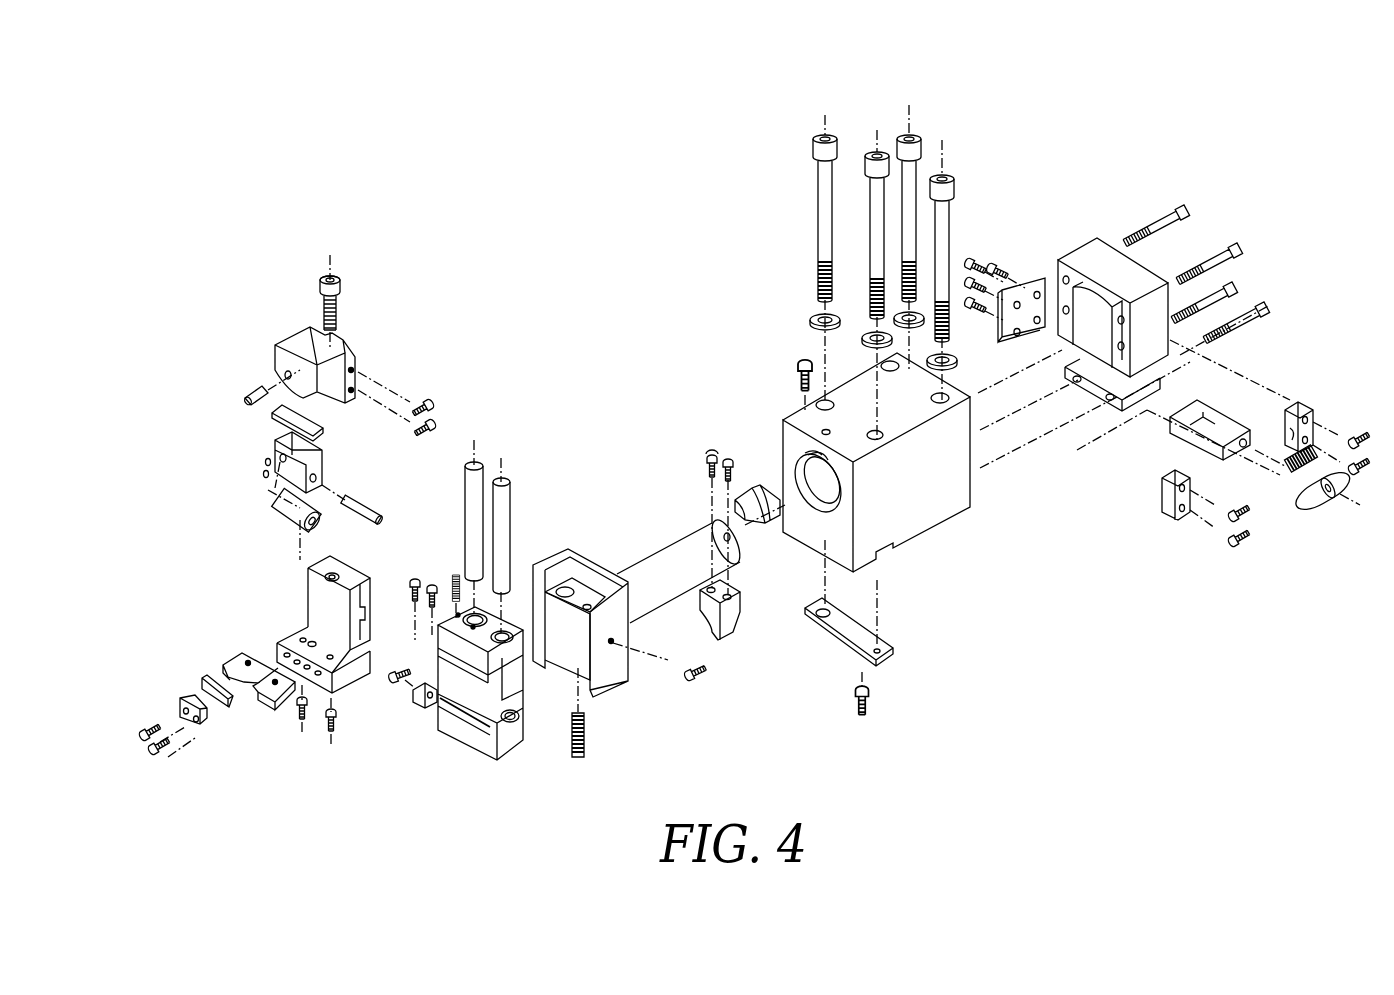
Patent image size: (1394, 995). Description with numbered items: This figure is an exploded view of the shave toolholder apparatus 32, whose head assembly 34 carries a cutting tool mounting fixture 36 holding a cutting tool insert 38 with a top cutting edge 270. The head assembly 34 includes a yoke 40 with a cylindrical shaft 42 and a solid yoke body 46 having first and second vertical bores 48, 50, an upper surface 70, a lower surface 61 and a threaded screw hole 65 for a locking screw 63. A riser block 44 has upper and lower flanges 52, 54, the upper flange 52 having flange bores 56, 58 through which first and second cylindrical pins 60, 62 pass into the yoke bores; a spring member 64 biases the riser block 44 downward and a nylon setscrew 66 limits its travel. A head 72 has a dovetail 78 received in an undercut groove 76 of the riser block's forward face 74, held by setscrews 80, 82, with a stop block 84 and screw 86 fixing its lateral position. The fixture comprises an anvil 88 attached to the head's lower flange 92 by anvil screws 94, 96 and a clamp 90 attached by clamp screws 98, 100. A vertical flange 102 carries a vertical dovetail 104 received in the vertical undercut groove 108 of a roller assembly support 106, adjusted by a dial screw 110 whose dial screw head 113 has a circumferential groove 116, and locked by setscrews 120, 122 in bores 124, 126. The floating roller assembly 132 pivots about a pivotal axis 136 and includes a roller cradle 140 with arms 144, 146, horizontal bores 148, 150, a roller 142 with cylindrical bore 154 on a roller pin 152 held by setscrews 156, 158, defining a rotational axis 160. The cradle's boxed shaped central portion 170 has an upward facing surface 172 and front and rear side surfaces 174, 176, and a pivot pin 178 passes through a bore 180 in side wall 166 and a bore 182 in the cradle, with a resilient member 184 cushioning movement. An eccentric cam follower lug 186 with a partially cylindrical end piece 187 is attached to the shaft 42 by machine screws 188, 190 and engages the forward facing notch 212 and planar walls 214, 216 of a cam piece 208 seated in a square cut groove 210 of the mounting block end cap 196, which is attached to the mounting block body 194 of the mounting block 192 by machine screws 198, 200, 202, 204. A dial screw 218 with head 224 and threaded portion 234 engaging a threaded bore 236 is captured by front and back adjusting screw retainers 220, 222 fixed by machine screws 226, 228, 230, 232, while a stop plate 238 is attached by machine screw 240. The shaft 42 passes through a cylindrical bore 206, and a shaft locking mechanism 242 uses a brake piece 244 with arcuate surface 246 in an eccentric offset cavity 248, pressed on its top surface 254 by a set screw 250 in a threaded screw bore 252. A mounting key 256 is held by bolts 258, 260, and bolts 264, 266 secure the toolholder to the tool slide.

The toolholder apparatus 32 is at (1094, 122).
The head assembly 34 is at (449, 679).
The cutting tool mounting fixture 36 is at (209, 750).
The cutting tool insert 38 is at (205, 695).
The yoke 40 is at (609, 631).
The cylindrical shaft 42 is at (672, 547).
The riser block 44 is at (484, 685).
The solid yoke body 46 is at (560, 632).
The first vertical bore 48 is at (565, 590).
The second vertical bore 50 is at (590, 606).
The upper flange 52 is at (508, 663).
The lower flange 54 is at (516, 742).
The flange bore 56 is at (480, 615).
The flange bore 58 is at (505, 632).
The first cylindrical pin 60 is at (480, 464).
The lower surface 61 is at (573, 668).
The second cylindrical pin 62 is at (506, 480).
The locking screw 63 is at (688, 678).
The spring member 64 is at (578, 760).
The threaded screw hole 65 is at (611, 644).
The nylon setscrew 66 is at (456, 574).
The upper surface 70 is at (580, 598).
The head 72 is at (312, 698).
The forward face 74 is at (483, 727).
The undercut groove 76 is at (450, 705).
The dovetail 78 is at (372, 622).
The setscrew 80 is at (414, 582).
The setscrew 82 is at (432, 587).
The stop block 84 is at (425, 707).
The screw 86 is at (393, 680).
The anvil 88 is at (260, 700).
The clamp 90 is at (195, 730).
The lower flange 92 is at (290, 638).
The anvil screw 94 is at (302, 722).
The anvil screw 96 is at (331, 735).
The clamp screw 98 is at (142, 735).
The clamp screw 100 is at (155, 750).
The vertical flange 102 is at (330, 576).
The vertical dovetail 104 is at (310, 594).
The roller assembly support 106 is at (360, 362).
The vertical undercut groove 108 is at (345, 343).
The dial screw 110 is at (386, 289).
The dial screw head 113 is at (336, 280).
The circumferential groove 116 is at (320, 288).
The setscrew 120 is at (432, 402).
The setscrew 122 is at (434, 423).
The bore 124 is at (368, 367).
The bore 126 is at (378, 376).
The floating roller assembly 132 is at (334, 495).
The pivotal axis 136 is at (244, 398).
The roller cradle 140 is at (500, 455).
The roller 142 is at (290, 525).
The arm 144 is at (265, 464).
The arm 146 is at (350, 500).
The horizontal bore 148 is at (275, 489).
The horizontal bore 150 is at (300, 565).
The roller pin 152 is at (345, 507).
The cylindrical bore 154 is at (305, 521).
The setscrew 156 is at (264, 476).
The setscrew 158 is at (280, 510).
The rotational axis 160 is at (380, 522).
The side facing planar surface 166 is at (285, 372).
The boxed shaped central portion 170 is at (346, 462).
The upward facing surface 172 is at (322, 455).
The front side surface 174 is at (277, 452).
The rear side surface 176 is at (320, 470).
The pivot pin 178 is at (270, 390).
The bore 180 is at (298, 345).
The bore 182 is at (320, 428).
The resilient member 184 is at (275, 425).
The eccentric cam follower lug 186 is at (764, 585).
The partially cylindrical end piece 187 is at (735, 625).
The machine screw 188 is at (705, 460).
The machine screw 190 is at (724, 458).
The mounting block 192 is at (1036, 380).
The mounting block body 194 is at (925, 545).
The mounting block end cap 196 is at (1080, 256).
The machine screw 198 is at (1188, 212).
The machine screw 200 is at (1240, 250).
The machine screw 202 is at (1236, 290).
The machine screw 204 is at (1268, 305).
The cylindrical bore 206 is at (818, 502).
The cam piece 208 is at (1215, 483).
The square cut groove 210 is at (1062, 447).
The forward facing notch 212 is at (1162, 447).
The planar wall 214 is at (1196, 424).
The planar wall 216 is at (1200, 445).
The dial screw 218 is at (1324, 501).
The front adjusting screw retainer 220 is at (1167, 510).
The back adjusting screw retainer 222 is at (1303, 402).
The head 224 is at (1324, 501).
The machine screw 226 is at (1233, 543).
The machine screw 228 is at (1230, 520).
The machine screw 230 is at (1353, 442).
The machine screw 232 is at (1354, 472).
The threaded portion 234 is at (1300, 476).
The threaded bore 236 is at (1248, 436).
The stop plate 238 is at (1018, 282).
The machine screw 240 is at (975, 262).
The shaft locking mechanism 242 is at (723, 387).
The brake piece 244 is at (730, 458).
The arcuate surface 246 is at (748, 525).
The eccentric offset cavity 248 is at (812, 453).
The set screw 250 is at (803, 362).
The threaded screw bore 252 is at (830, 433).
The top surface 254 is at (758, 485).
The mounting key 256 is at (882, 654).
The bolt 258 is at (823, 133).
The bolt 260 is at (875, 150).
The bolt 264 is at (911, 133).
The bolt 266 is at (945, 174).
The top cutting edge 270 is at (222, 708).